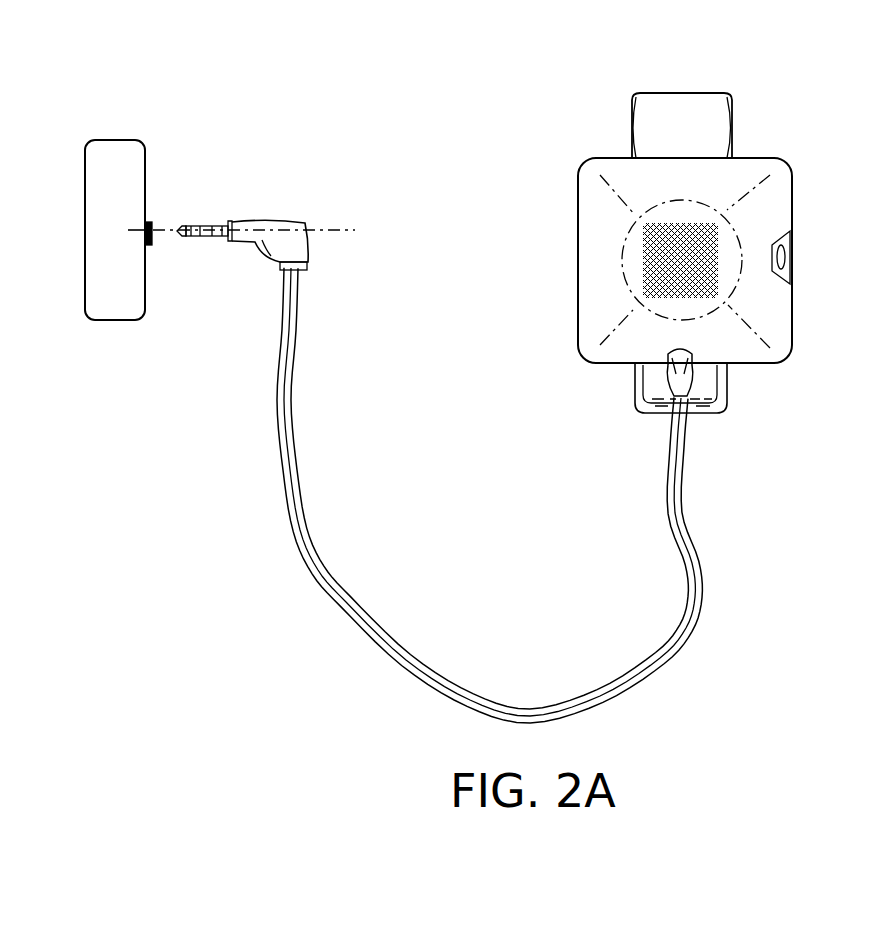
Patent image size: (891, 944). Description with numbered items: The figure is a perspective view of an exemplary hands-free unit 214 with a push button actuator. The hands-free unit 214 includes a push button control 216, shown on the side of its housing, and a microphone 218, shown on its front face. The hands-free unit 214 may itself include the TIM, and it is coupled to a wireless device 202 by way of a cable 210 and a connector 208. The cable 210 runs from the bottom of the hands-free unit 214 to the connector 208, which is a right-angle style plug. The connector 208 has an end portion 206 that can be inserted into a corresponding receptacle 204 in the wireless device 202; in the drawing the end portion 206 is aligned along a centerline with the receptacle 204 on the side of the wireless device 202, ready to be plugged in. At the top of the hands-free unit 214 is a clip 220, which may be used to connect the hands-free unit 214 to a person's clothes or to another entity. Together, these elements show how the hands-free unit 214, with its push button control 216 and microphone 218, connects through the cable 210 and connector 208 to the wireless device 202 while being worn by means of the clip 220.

The wireless device 202 is at (120, 140).
The receptacle 204 is at (150, 221).
The end portion 206 is at (207, 225).
The connector 208 is at (278, 221).
The cable 210 is at (298, 440).
The hands-free unit 214 is at (766, 158).
The push button control 216 is at (793, 256).
The microphone 218 is at (648, 248).
The clip 220 is at (690, 94).